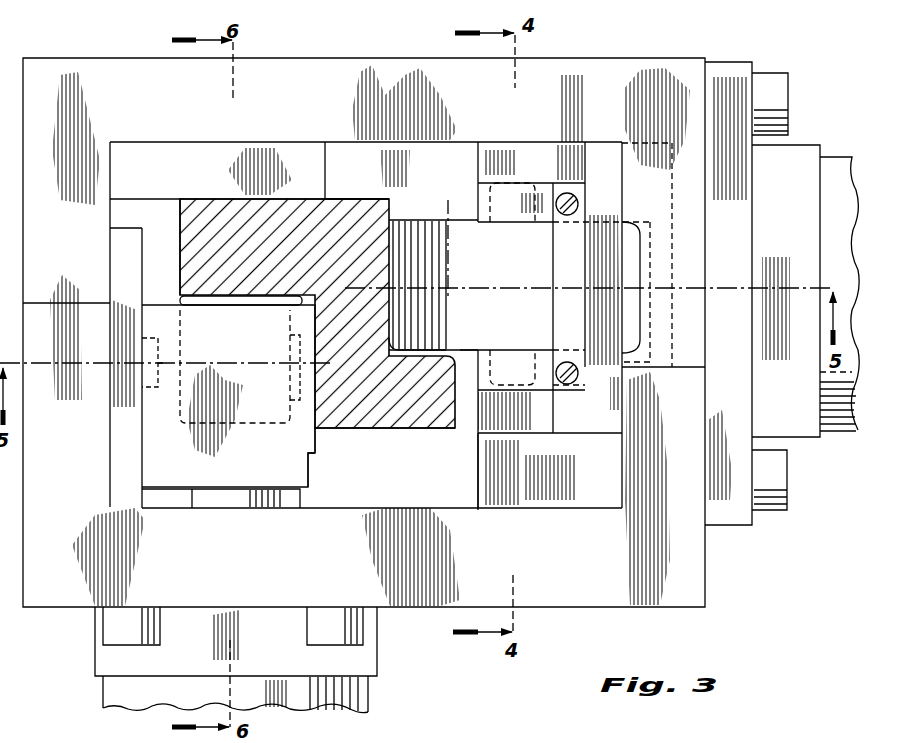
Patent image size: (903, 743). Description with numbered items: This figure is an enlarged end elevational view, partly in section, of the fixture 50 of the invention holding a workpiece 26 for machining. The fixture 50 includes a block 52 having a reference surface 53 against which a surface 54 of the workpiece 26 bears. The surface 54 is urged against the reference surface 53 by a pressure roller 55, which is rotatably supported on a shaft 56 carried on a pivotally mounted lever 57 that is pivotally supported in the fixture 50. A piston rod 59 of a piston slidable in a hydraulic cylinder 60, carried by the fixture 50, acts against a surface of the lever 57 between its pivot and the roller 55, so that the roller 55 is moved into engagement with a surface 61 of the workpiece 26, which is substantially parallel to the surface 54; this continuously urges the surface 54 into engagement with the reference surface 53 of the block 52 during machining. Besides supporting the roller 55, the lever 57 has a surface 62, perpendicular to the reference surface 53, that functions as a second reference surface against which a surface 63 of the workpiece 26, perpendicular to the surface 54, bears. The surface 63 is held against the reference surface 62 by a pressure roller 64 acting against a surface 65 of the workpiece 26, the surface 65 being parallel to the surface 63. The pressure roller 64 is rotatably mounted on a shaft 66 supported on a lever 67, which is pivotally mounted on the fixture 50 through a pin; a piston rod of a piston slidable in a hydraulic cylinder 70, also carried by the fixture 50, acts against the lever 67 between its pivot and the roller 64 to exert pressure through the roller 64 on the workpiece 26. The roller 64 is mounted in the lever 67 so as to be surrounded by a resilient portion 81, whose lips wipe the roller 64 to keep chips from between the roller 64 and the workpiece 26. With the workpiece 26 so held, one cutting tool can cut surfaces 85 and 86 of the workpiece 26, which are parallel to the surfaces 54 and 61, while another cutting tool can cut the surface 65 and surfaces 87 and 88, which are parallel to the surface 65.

The workpiece 26 is at (423, 432).
The fixture 50 is at (708, 556).
The block 52 is at (322, 149).
The reference surface 53 is at (327, 204).
The surface of the workpiece 54 is at (190, 198).
The pressure roller 55 is at (262, 430).
The shaft 56 is at (162, 388).
The lever 57 is at (313, 463).
The piston rod 59 is at (218, 498).
The hydraulic cylinder 60 is at (368, 700).
The surface of the workpiece 61 is at (245, 300).
The reference surface 62 is at (318, 443).
The surface of the workpiece 63 is at (293, 398).
The pressure roller 64 is at (462, 225).
The surface of the workpiece 65 is at (391, 208).
The shaft 66 is at (522, 378).
The lever 67 is at (477, 414).
The hydraulic cylinder 70 is at (836, 157).
The resilient portion 81 is at (600, 212).
The surface of the workpiece 85 is at (448, 355).
The surface of the workpiece 86 is at (386, 430).
The surface of the workpiece 87 is at (180, 208).
The surface of the workpiece 88 is at (470, 350).